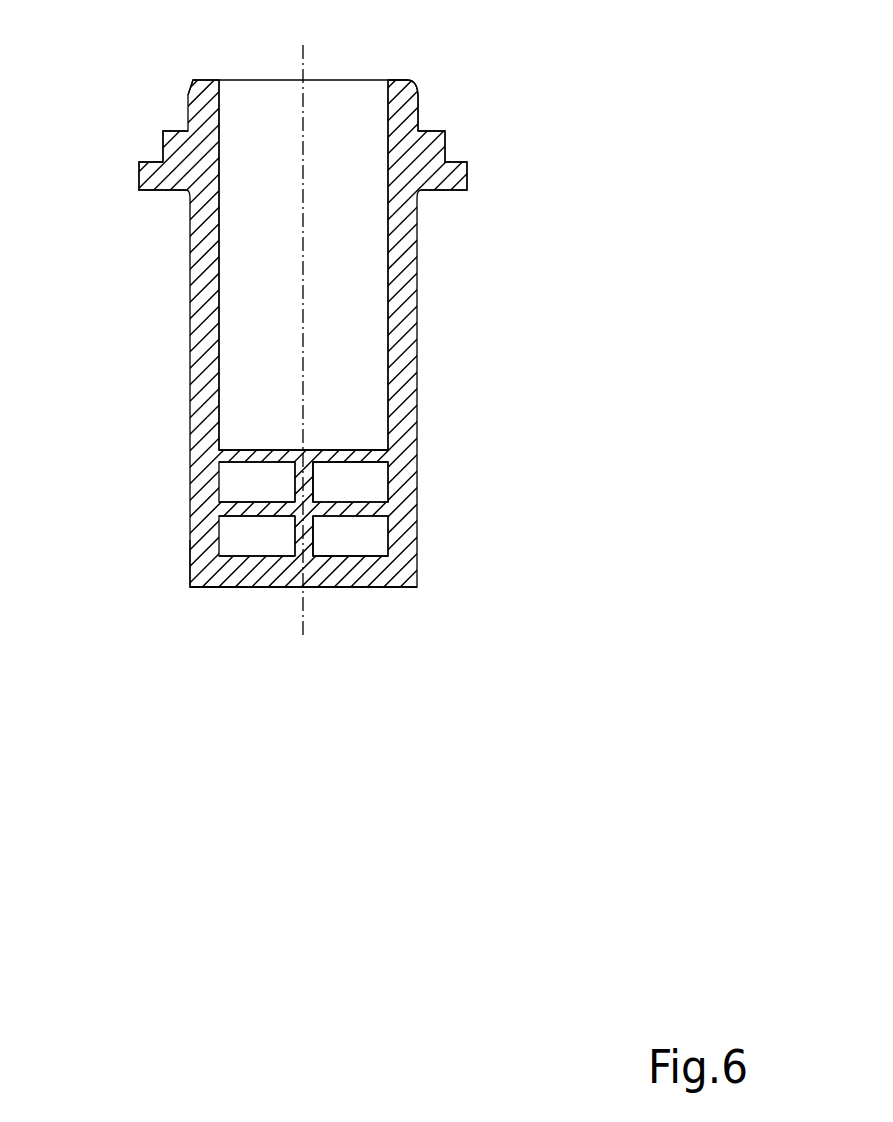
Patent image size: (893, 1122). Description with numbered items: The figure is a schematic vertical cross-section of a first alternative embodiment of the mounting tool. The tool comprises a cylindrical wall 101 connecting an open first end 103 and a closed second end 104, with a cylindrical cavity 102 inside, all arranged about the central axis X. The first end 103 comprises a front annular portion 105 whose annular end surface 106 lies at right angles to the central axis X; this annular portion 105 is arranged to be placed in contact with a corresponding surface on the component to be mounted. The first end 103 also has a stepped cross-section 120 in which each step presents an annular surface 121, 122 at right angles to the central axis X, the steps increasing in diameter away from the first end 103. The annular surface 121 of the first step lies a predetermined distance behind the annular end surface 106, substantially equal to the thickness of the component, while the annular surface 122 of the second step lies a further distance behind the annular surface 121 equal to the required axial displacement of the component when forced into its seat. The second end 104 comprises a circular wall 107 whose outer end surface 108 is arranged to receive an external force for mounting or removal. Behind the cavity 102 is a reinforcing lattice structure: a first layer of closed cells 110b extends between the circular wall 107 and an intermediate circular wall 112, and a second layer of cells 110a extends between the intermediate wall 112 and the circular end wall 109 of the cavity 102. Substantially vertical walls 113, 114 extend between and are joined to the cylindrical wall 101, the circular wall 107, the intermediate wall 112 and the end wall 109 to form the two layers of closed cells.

The cylindrical wall 101 is at (176, 342).
The cavity 102 is at (272, 125).
The first end 103 is at (183, 67).
The second end 104 is at (165, 593).
The front annular portion 105 is at (423, 107).
The annular end surface 106 is at (408, 81).
The circular wall 107 is at (203, 595).
The outer end surface 108 is at (270, 588).
The circular wall of the cavity 109 is at (245, 447).
The second layer of cells 110a is at (358, 485).
The first layer of cells 110b is at (358, 540).
The intermediate circular wall 112 is at (258, 498).
The vertical wall 113 is at (313, 533).
The vertical wall 114 is at (313, 477).
The stepped cross-section 120 is at (483, 148).
The annular surface of first step 121 is at (178, 131).
The annular surface of second step 122 is at (152, 161).
The central axis x is at (307, 610).